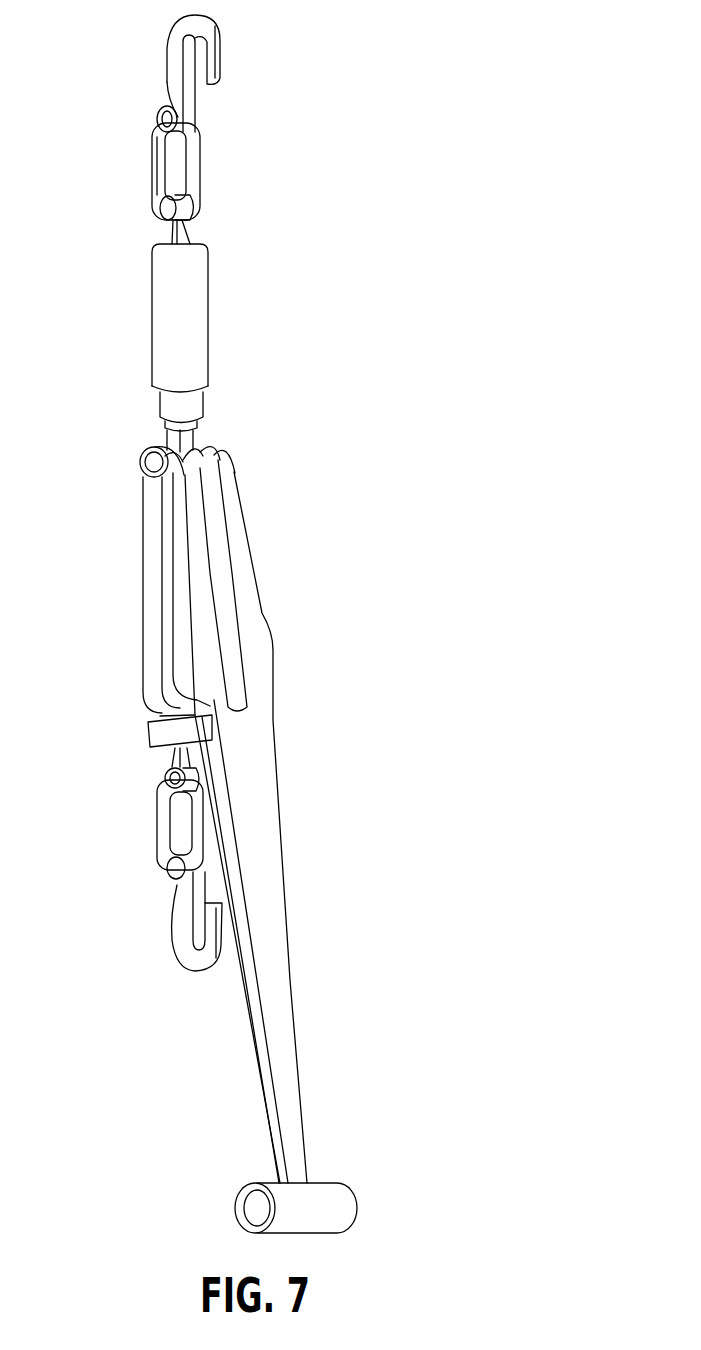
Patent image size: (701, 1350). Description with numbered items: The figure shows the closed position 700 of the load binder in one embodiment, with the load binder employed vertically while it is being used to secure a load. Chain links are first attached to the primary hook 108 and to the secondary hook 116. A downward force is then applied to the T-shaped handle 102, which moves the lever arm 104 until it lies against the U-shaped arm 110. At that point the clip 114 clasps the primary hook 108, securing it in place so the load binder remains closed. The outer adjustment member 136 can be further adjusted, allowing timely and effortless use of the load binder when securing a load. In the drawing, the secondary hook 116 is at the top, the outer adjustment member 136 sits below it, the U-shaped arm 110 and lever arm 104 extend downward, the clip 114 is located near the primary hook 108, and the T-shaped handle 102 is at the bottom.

The closed position 700 is at (440, 178).
The secondary hook 116 is at (172, 53).
The outer adjustment member 136 is at (175, 322).
The U-shaped arm 110 is at (157, 535).
The clip 114 is at (150, 740).
The lever arm 104 is at (263, 781).
The primary hook 108 is at (175, 950).
The T-shaped handle 102 is at (337, 1207).